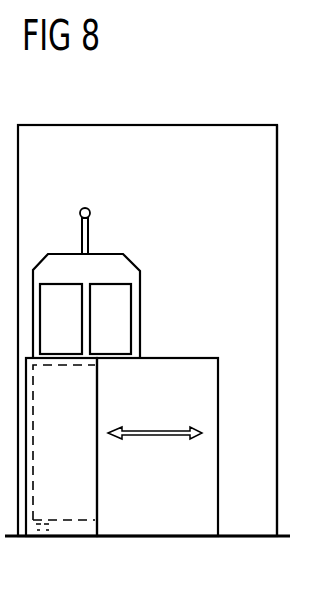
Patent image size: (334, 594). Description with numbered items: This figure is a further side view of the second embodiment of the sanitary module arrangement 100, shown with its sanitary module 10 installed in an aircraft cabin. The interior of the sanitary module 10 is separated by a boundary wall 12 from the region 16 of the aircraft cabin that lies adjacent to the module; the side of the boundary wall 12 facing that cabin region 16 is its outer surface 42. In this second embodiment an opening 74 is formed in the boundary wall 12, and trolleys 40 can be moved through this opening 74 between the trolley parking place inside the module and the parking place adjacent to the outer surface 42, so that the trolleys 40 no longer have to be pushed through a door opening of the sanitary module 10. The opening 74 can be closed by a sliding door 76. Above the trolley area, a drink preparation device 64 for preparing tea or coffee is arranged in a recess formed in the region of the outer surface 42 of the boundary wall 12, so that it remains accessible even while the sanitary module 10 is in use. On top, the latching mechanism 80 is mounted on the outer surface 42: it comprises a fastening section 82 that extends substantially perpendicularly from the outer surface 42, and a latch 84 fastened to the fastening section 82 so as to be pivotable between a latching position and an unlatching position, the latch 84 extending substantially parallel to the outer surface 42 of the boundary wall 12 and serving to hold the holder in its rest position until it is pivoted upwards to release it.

The sanitary module 10 is at (180, 117).
The sanitary module arrangement 100 is at (233, 103).
The boundary wall 12 is at (266, 151).
The outer surface 42 is at (260, 181).
The region of the aircraft cabin 16 is at (253, 513).
The trolley 40 is at (68, 515).
The opening 74 is at (31, 434).
The sliding door 76 is at (162, 513).
The drink preparation device 64 is at (116, 271).
The latching mechanism 80 is at (88, 205).
The fastening section 82 is at (85, 208).
The latch 84 is at (80, 232).